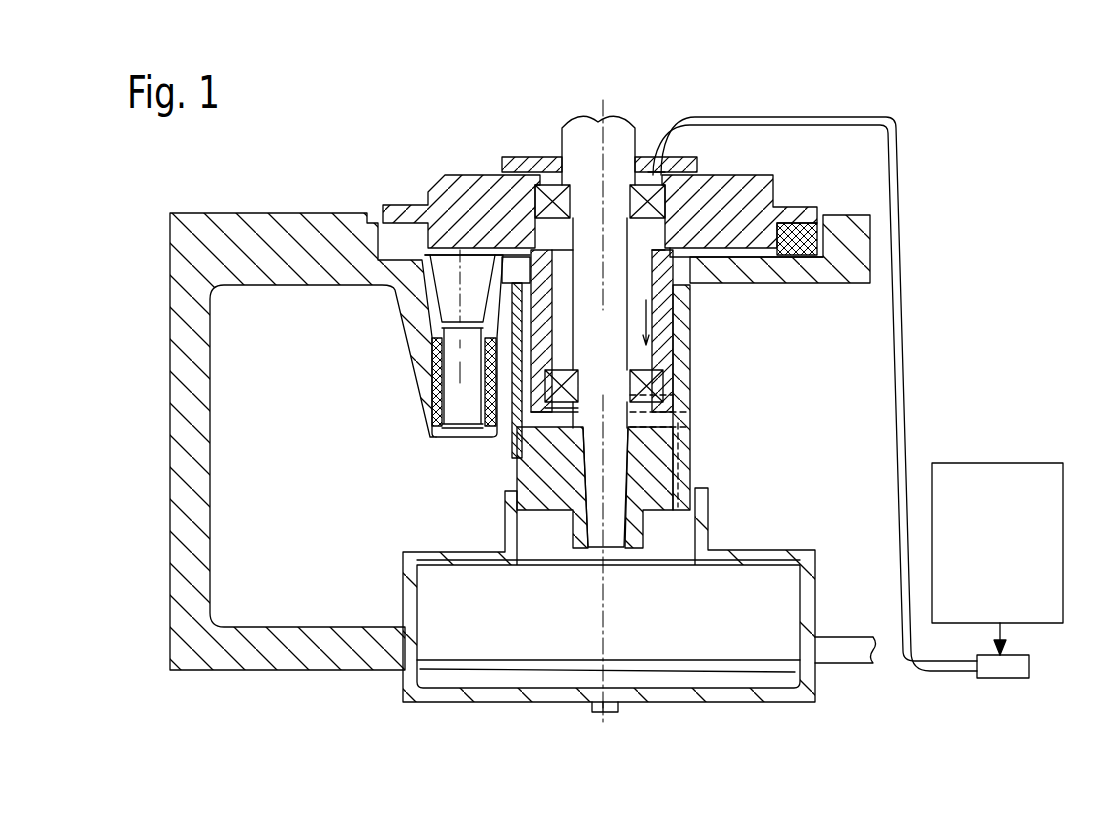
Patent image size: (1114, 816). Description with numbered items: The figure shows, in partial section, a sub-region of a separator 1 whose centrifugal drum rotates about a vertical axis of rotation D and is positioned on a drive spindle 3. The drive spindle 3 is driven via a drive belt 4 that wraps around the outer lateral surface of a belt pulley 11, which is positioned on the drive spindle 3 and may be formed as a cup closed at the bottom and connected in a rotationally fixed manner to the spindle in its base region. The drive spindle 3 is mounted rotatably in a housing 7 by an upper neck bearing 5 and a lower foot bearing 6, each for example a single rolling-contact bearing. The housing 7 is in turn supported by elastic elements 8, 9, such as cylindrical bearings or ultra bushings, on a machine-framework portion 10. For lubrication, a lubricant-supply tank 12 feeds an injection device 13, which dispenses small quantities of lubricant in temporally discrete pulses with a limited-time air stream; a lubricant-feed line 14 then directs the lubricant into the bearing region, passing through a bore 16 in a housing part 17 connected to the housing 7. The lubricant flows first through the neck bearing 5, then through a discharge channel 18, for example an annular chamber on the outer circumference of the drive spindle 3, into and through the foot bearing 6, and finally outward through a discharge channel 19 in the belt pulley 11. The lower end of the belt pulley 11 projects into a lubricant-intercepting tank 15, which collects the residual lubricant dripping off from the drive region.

The separator 1 is at (892, 61).
The drive spindle 3 is at (577, 137).
The drive belt 4 is at (515, 442).
The neck bearing 5 is at (538, 200).
The foot bearing 6 is at (517, 432).
The housing 7 is at (443, 193).
The elastic element 8 is at (793, 238).
The elastic element 9 is at (433, 370).
The machine-framework portion 10 is at (243, 243).
The belt pulley 11 is at (690, 343).
The lubricant-supply tank 12 is at (1062, 512).
The injection device 13 is at (1002, 678).
The lubricant-feed line 14 is at (900, 120).
The lubricant-intercepting tank 15 is at (747, 623).
The bore 16 is at (652, 177).
The housing part 17 is at (690, 163).
The discharge channel 18 is at (630, 268).
The discharge channel 19 is at (680, 452).
The vertical axis of rotation D is at (603, 712).